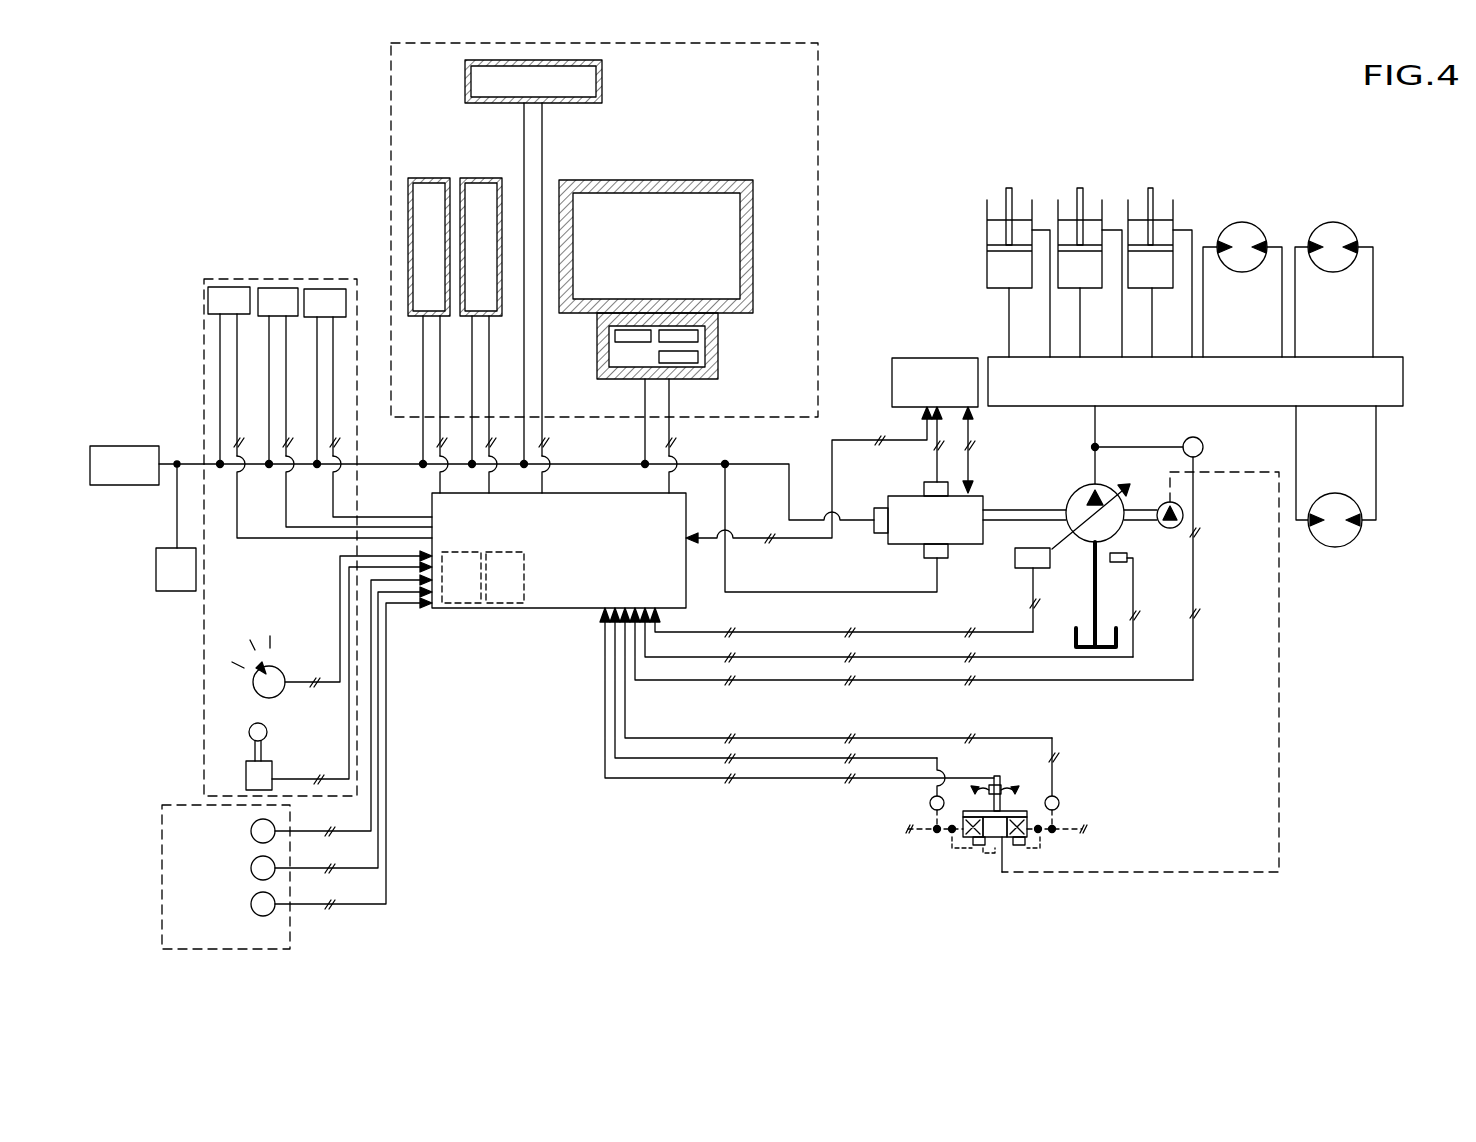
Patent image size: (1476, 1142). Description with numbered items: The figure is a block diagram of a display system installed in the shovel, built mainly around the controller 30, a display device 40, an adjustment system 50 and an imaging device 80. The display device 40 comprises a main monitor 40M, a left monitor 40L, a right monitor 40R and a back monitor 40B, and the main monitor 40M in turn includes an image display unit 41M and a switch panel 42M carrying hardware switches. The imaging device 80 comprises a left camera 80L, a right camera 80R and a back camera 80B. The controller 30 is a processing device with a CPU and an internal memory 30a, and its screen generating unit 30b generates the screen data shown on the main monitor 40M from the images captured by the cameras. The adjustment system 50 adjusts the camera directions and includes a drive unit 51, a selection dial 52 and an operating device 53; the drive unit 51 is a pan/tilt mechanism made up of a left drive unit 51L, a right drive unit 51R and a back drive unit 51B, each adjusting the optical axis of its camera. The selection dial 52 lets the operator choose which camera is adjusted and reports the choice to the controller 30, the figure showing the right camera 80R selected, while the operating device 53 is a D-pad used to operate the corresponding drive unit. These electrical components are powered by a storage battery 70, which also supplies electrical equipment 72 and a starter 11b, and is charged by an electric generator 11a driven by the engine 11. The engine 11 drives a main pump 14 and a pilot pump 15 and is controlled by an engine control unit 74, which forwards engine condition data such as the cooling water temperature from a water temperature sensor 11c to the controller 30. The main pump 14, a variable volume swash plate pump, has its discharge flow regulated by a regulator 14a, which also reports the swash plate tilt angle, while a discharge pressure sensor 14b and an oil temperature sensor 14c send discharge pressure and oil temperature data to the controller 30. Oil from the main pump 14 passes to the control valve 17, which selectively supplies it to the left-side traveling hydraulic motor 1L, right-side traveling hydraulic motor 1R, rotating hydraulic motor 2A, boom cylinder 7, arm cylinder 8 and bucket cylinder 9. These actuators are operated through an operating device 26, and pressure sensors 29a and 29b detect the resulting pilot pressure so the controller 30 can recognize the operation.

The left-side traveling hydraulic motor 1L is at (1242, 222).
The right-side traveling hydraulic motor 1R is at (1333, 222).
The rotating hydraulic motor 2A is at (1332, 548).
The boom cylinder 7 is at (1008, 188).
The arm cylinder 8 is at (1080, 188).
The bucket cylinder 9 is at (1150, 188).
The engine 11 is at (985, 496).
The electric generator 11a is at (948, 556).
The starter 11b is at (874, 528).
The water temperature sensor 11c is at (924, 488).
The main pump 14 is at (1075, 495).
The regulator 14a is at (1034, 570).
The discharge pressure sensor 14b is at (1205, 447).
The oil temperature sensor 14c is at (1128, 557).
The pilot pump 15 is at (1165, 500).
The control valve 17 is at (1397, 355).
The operating device 26 is at (1003, 788).
The pressure sensor 29a is at (930, 803).
The pressure sensor 29b is at (1060, 803).
The controller 30 is at (573, 620).
The internal memory 30a is at (448, 615).
The screen generating unit 30b is at (508, 615).
The display device 40 is at (391, 185).
The back monitor 40B is at (465, 84).
The left monitor 40L is at (428, 178).
The right monitor 40R is at (488, 178).
The main monitor 40M is at (798, 116).
The image display unit 41M is at (678, 220).
The switch panel 42M is at (718, 330).
The adjustment system 50 is at (200, 352).
The drive unit 51 is at (357, 222).
The back drive unit 51B is at (226, 287).
The left drive unit 51L is at (279, 288).
The right drive unit 51R is at (326, 289).
The selection dial 52 is at (286, 672).
The operating device 53 is at (267, 727).
The storage battery 70 is at (156, 561).
The electrical equipment 72 is at (122, 486).
The engine control unit (ECU) 74 is at (940, 356).
The imaging device 80 is at (162, 880).
The left camera 80L is at (251, 831).
The right camera 80R is at (251, 868).
The back camera 80B is at (251, 904).